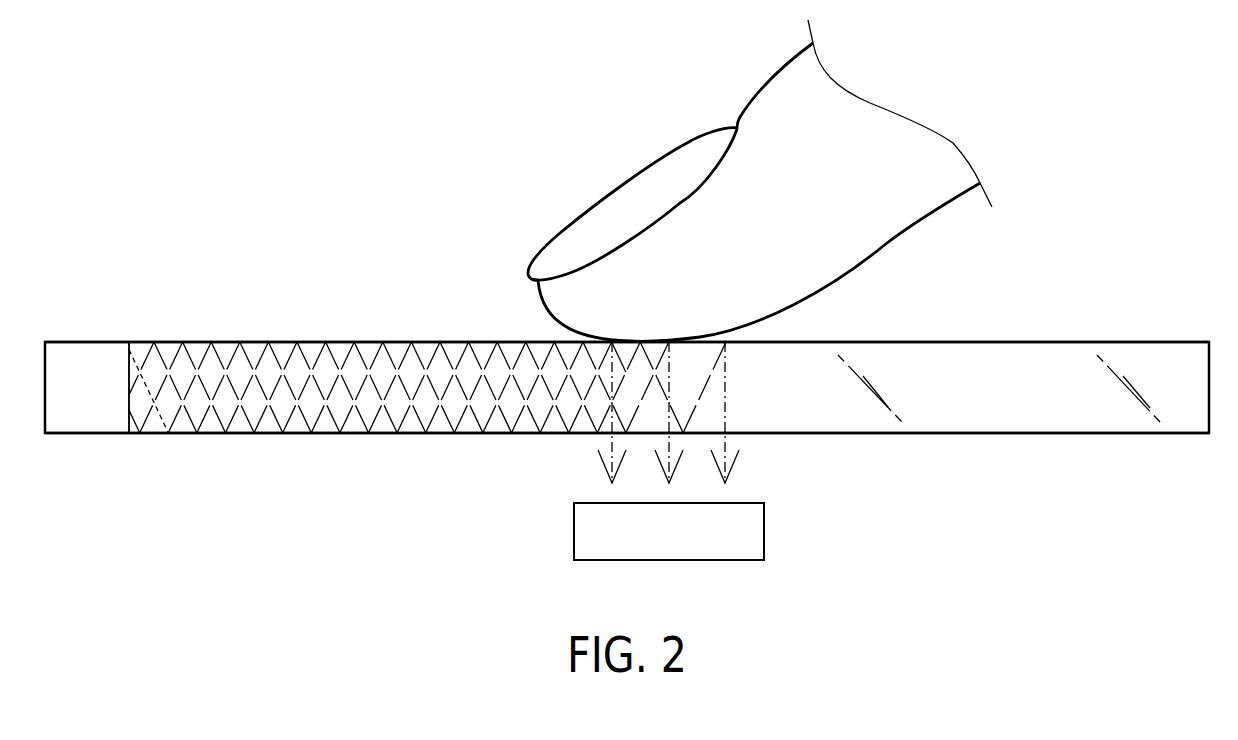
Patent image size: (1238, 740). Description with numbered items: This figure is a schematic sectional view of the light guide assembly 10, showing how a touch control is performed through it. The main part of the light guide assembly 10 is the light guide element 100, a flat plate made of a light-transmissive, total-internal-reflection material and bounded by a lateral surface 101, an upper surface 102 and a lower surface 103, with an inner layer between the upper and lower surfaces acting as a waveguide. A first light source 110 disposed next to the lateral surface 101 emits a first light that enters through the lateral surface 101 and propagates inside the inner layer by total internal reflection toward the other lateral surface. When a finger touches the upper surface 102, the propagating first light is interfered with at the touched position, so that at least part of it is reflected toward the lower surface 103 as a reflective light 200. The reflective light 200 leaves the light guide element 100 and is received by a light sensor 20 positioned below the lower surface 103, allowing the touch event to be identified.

The light guide assembly 10 is at (233, 51).
The light sensor 20 is at (745, 533).
The light guide element 100 is at (627, 389).
The lateral surface 101 is at (128, 369).
The upper surface 102 is at (1117, 342).
The lower surface 103 is at (1117, 433).
The first light source 110 is at (90, 403).
The reflective light 200 is at (725, 390).